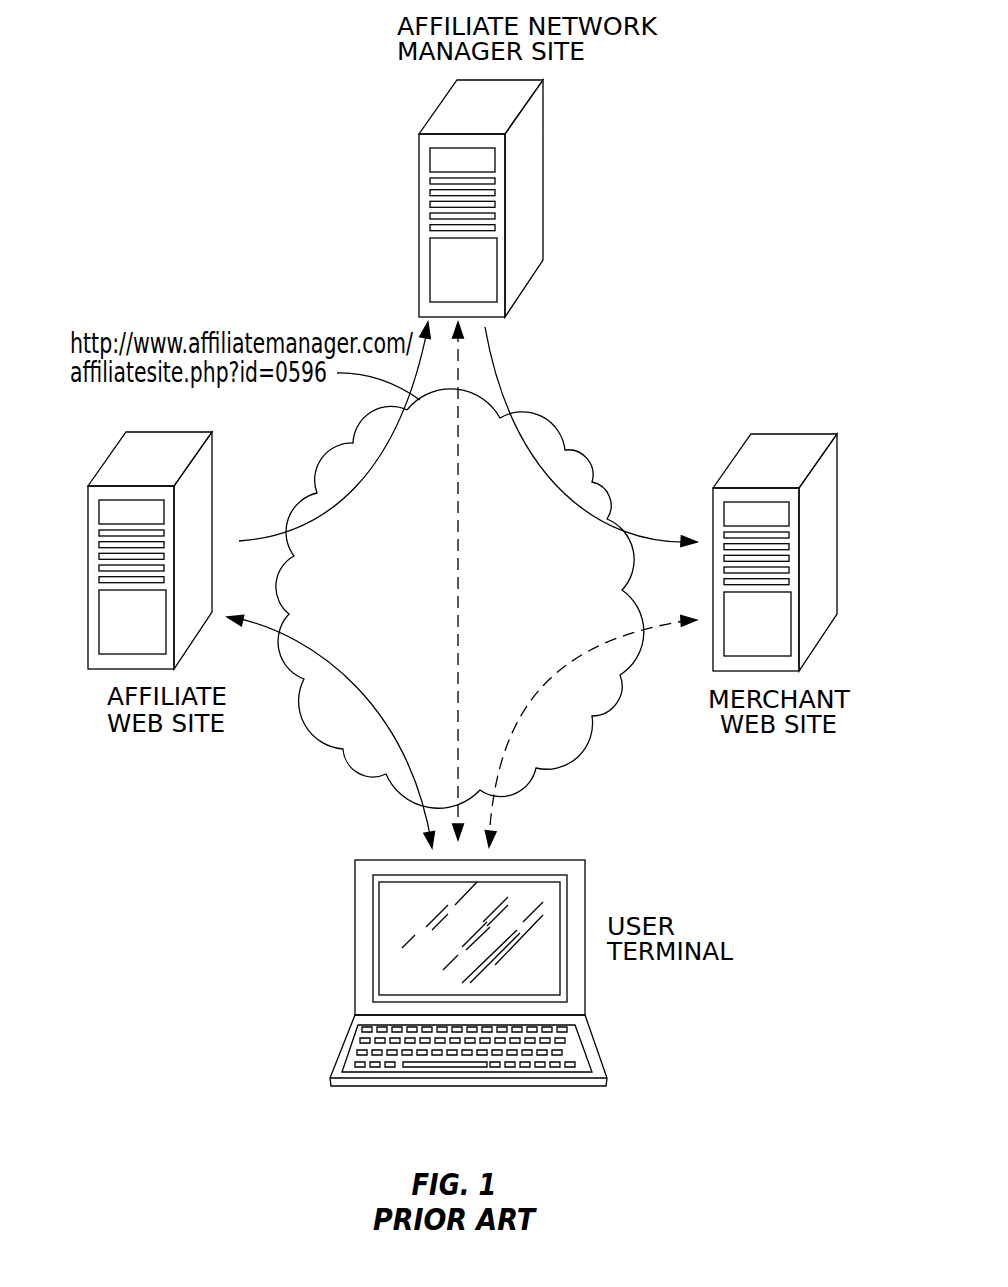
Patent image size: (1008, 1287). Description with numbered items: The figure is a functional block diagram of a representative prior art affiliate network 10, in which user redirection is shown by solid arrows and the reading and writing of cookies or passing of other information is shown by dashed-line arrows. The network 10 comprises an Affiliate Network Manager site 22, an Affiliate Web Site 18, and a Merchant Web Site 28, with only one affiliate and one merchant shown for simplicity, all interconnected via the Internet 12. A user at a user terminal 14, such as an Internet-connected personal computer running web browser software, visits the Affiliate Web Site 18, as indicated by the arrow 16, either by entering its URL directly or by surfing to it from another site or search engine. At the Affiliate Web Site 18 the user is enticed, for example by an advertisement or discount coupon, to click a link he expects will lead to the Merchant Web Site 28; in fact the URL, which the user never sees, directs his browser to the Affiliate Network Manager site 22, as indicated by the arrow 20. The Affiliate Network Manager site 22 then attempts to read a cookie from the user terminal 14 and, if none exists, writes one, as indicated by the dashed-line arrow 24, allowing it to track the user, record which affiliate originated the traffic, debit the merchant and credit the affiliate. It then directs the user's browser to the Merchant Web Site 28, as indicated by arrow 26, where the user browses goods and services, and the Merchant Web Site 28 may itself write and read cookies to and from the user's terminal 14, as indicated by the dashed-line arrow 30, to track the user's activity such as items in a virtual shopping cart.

The affiliate network 10 is at (240, 143).
The Internet 12 is at (557, 420).
The user terminal 14 is at (355, 913).
The arrow 16 is at (421, 811).
The affiliate web site 18 is at (122, 442).
The arrow 20 is at (260, 538).
The affiliate network manager site 22 is at (543, 142).
The dashed-line arrow 24 is at (458, 656).
The arrow 26 is at (495, 363).
The merchant web site 28 is at (797, 430).
The dashed-line arrow 30 is at (492, 807).